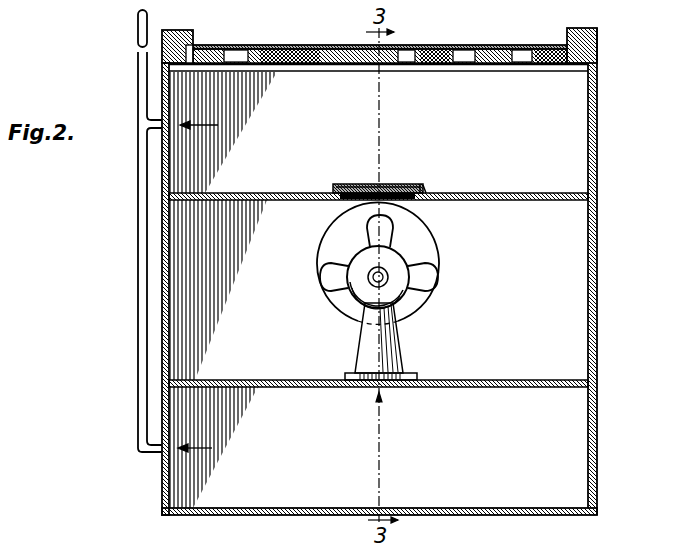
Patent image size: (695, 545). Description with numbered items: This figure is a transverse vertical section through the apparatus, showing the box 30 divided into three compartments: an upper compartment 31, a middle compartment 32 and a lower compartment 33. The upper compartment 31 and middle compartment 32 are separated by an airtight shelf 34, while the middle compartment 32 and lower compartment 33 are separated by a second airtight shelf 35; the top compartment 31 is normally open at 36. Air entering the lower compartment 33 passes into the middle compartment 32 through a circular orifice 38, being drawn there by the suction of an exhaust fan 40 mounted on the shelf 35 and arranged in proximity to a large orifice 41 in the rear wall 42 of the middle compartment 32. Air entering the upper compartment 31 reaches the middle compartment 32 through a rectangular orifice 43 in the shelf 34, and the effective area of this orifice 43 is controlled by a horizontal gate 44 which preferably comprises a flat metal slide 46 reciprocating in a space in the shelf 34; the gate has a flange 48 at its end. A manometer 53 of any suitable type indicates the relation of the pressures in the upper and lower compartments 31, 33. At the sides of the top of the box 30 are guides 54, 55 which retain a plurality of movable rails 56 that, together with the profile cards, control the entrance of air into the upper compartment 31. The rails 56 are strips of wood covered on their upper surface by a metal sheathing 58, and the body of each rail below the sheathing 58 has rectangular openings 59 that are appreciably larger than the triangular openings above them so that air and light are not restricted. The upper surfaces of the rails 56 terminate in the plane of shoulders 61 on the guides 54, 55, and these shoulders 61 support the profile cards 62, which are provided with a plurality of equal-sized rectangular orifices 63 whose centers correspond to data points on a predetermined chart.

The box 30 is at (573, 165).
The upper compartment 31 is at (573, 128).
The middle compartment 32 is at (570, 252).
The lower compartment 33 is at (573, 490).
The airtight shelf 34 is at (573, 197).
The airtight shelf 35 is at (573, 384).
The opening of top compartment 36 is at (530, 74).
The circular orifice 38 is at (375, 392).
The exhaust fan 40 is at (395, 350).
The large orifice 41 is at (430, 240).
The rear wall 42 is at (411, 267).
The rectangular orifice 43 is at (362, 203).
The horizontal gate 44 is at (355, 183).
The flat metal slide 46 is at (380, 184).
The bracket flange 48 is at (410, 200).
The manometer 53 is at (142, 288).
The guide 54 is at (560, 60).
The guide 55 is at (190, 58).
The movable rails 56 is at (396, 67).
The metal sheathing 58 is at (345, 48).
The rectangular openings 59 is at (240, 62).
The shoulders 61 is at (199, 50).
The profile cards 62 is at (452, 50).
The rectangular orifices 63 is at (294, 46).